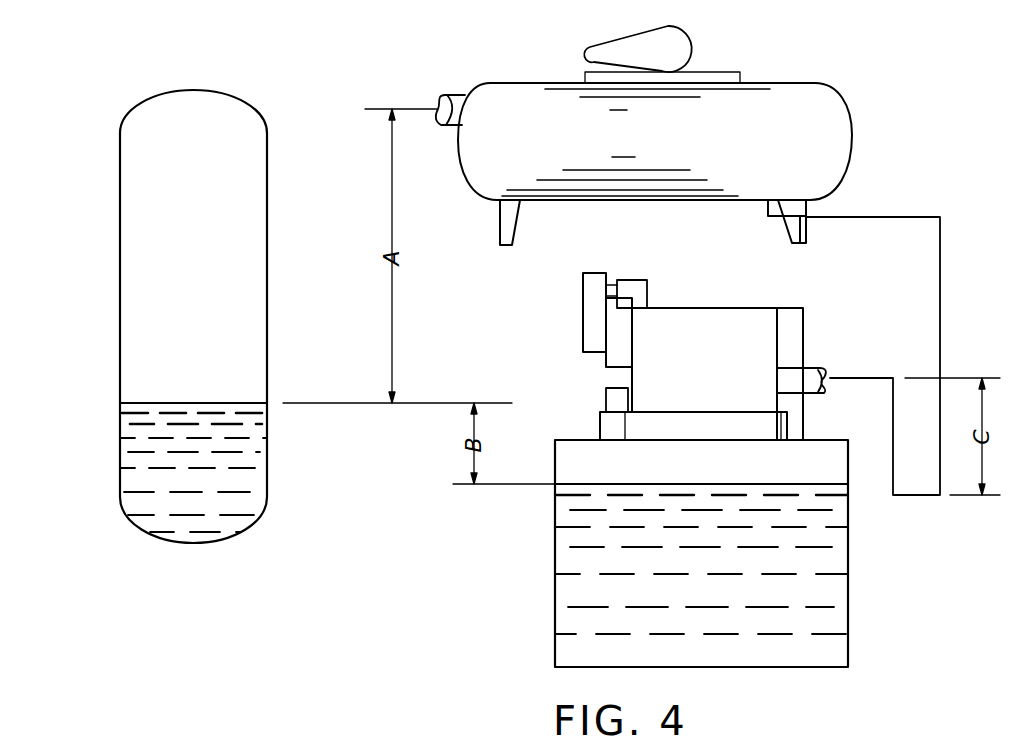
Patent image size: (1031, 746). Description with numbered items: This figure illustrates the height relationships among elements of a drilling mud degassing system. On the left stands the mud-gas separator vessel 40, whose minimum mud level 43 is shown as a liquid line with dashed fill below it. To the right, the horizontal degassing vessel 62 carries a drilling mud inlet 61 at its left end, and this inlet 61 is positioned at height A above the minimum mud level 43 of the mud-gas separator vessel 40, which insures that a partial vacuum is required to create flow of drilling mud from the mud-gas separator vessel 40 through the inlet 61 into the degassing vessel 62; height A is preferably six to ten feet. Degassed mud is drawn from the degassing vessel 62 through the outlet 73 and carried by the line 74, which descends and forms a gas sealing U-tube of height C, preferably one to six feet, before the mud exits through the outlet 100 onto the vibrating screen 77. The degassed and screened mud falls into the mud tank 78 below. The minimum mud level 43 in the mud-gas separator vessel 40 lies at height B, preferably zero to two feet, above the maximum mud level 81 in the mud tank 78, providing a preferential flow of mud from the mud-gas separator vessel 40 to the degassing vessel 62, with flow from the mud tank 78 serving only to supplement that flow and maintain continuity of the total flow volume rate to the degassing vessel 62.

The mud-gas separator vessel 40 is at (133, 262).
The minimum mud level 43 is at (193, 402).
The drilling mud inlet 61 is at (458, 97).
The degassing vessel 62 is at (523, 93).
The outlet 73 is at (768, 200).
The line 74 is at (942, 292).
The vibrating screen 77 is at (738, 327).
The mud tank 78 is at (575, 563).
The maximum mud level 81 is at (660, 485).
The outlet 100 is at (777, 378).